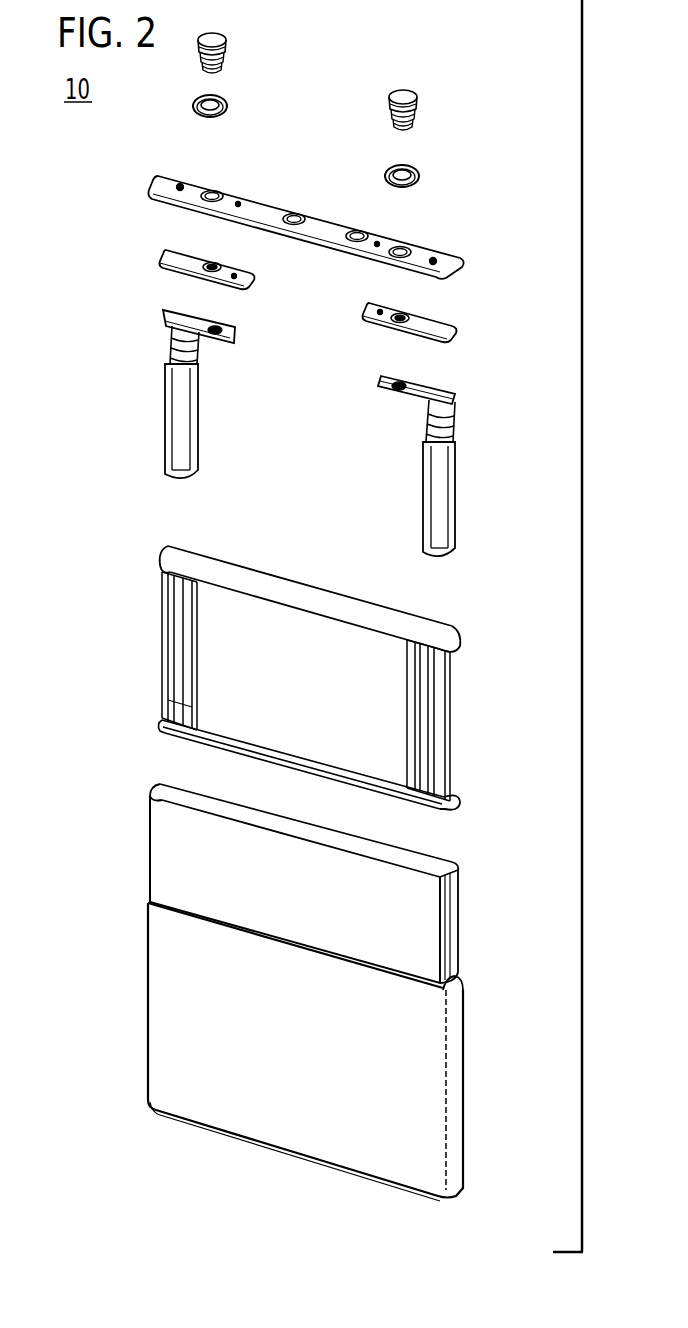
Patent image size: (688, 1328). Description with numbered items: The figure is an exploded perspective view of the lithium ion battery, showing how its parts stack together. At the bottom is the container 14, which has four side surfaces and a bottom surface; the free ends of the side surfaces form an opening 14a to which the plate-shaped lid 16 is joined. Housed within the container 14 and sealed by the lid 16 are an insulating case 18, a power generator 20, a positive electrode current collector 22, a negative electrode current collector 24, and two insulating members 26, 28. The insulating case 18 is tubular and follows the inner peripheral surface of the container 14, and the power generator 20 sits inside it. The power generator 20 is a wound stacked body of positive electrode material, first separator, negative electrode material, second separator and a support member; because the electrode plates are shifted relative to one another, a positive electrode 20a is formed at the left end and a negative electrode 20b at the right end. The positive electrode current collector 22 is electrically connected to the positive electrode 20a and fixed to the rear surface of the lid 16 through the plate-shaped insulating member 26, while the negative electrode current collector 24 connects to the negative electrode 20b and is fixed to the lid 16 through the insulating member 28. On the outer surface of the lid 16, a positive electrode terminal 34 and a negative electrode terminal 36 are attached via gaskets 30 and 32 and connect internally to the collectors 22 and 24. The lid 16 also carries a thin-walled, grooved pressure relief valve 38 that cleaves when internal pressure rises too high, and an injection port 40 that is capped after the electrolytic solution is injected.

The container 14 is at (345, 1052).
The opening 14a is at (462, 978).
The lid 16 is at (336, 219).
The insulating case 18 is at (455, 898).
The power generator 20 is at (312, 678).
The positive electrode 20a is at (165, 672).
The negative electrode 20b is at (452, 705).
The positive electrode current collector 22 is at (175, 406).
The negative electrode current collector 24 is at (440, 477).
The insulating member 26 is at (177, 254).
The insulating member 28 is at (441, 323).
The gasket 30 is at (228, 106).
The gasket 32 is at (420, 173).
The positive electrode terminal 34 is at (228, 47).
The negative electrode terminal 36 is at (419, 104).
The pressure relief valve 38 is at (293, 213).
The injection port 40 is at (358, 230).